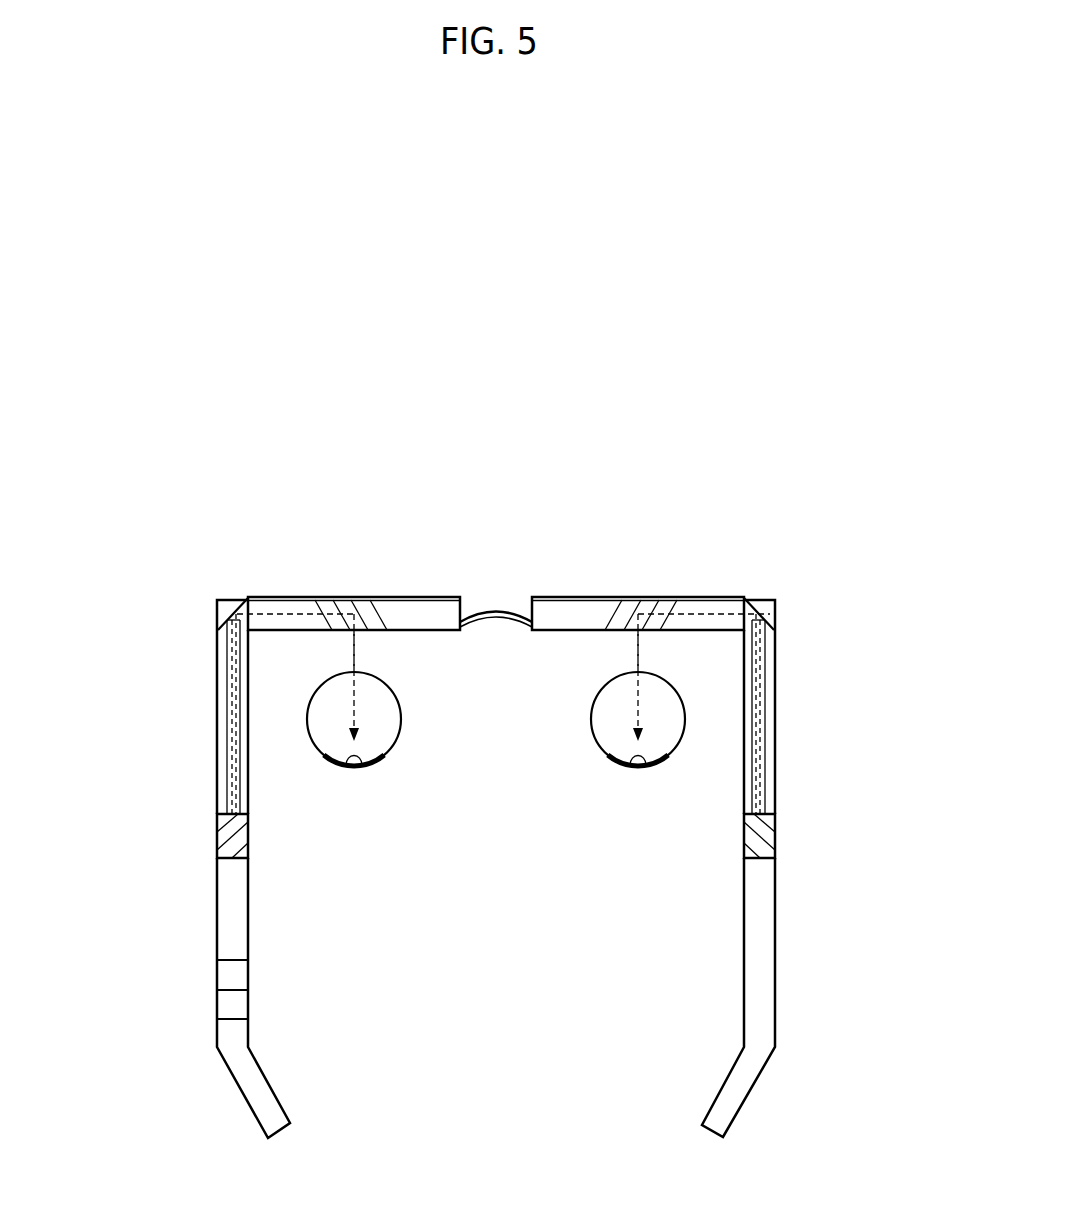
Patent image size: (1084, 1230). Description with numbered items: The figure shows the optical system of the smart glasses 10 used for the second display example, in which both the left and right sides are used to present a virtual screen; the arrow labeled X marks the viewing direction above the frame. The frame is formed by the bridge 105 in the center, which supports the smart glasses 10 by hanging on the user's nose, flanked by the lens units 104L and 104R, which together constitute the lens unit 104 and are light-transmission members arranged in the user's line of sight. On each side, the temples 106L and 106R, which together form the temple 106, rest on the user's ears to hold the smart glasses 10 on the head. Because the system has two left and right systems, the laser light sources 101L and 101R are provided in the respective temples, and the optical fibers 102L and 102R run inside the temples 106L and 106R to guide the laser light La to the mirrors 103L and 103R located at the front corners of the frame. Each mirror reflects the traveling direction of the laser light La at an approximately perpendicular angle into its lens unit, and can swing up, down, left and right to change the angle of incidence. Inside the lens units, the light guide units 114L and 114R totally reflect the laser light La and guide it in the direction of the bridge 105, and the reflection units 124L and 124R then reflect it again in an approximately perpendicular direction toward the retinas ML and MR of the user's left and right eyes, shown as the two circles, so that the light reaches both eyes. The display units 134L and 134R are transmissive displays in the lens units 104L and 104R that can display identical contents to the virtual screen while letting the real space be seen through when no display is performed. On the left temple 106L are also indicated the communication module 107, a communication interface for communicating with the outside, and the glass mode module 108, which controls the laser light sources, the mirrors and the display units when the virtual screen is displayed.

The smart glasses 10 is at (833, 375).
The laser light source 101L is at (218, 836).
The laser light source 101R is at (775, 836).
The optical fiber 102L is at (227, 716).
The optical fiber 102R is at (765, 716).
The mirror 103L is at (222, 609).
The mirror 103R is at (772, 609).
The lens unit 104 is at (503, 517).
The lens unit 104L is at (348, 517).
The lens unit 104R is at (651, 517).
The bridge 105 is at (498, 612).
The temple 106 is at (501, 998).
The temple 106L is at (166, 998).
The temple 106R is at (775, 1033).
The communication module 107 is at (217, 973).
The glass mode module 108 is at (217, 1033).
The light guide unit 114L is at (422, 597).
The light guide unit 114R is at (570, 597).
The reflection unit 124L is at (370, 597).
The reflection unit 124R is at (622, 597).
The display unit 134L is at (318, 597).
The display unit 134R is at (684, 597).
The retina ML is at (357, 768).
The retina MR is at (635, 768).
The laser light La is at (357, 650).
The X direction X is at (495, 414).